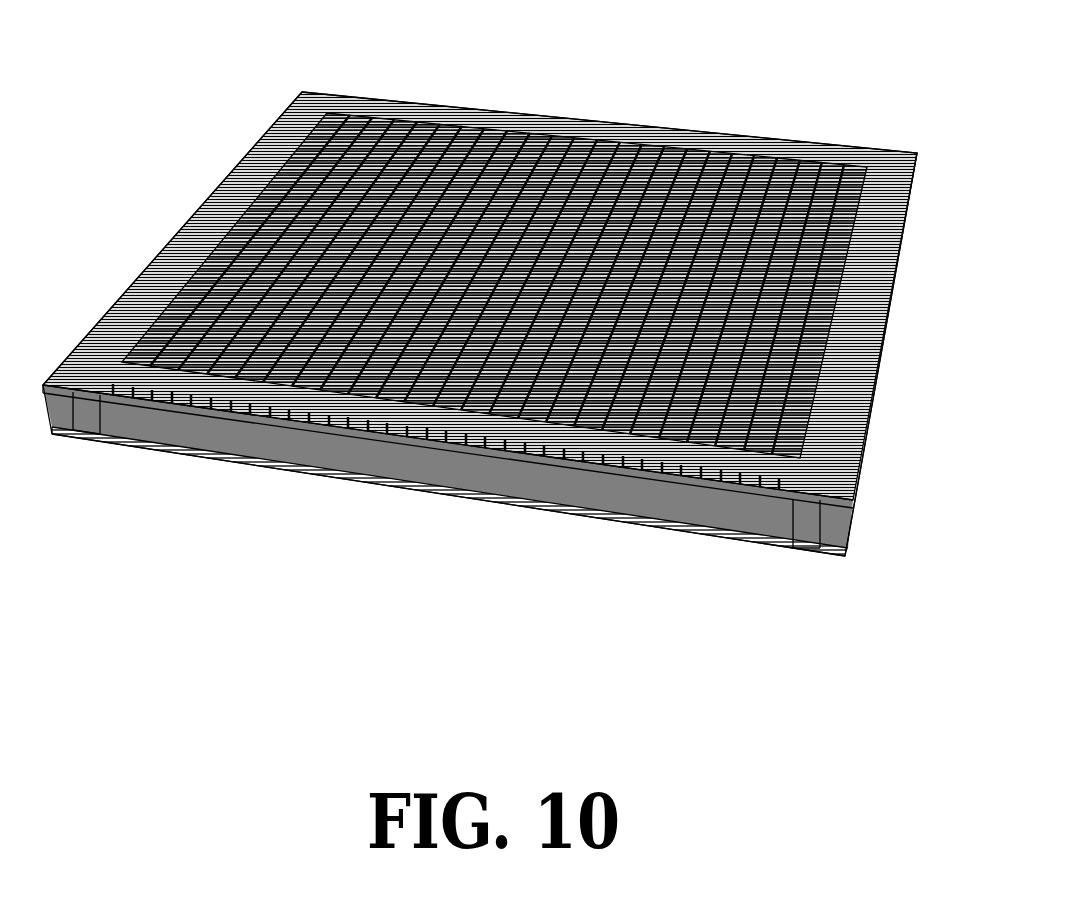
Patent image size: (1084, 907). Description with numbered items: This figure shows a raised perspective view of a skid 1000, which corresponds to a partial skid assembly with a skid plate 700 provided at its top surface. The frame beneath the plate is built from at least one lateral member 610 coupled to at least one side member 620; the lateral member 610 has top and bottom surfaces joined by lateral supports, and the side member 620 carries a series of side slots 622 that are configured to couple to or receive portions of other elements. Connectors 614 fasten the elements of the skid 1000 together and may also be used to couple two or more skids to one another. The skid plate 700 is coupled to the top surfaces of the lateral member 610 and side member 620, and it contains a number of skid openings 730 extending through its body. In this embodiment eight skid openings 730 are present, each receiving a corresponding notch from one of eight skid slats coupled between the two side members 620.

The skid 1000 is at (163, 582).
The lateral member 610 is at (213, 186).
The connector 614 is at (102, 428).
The side member 620 is at (825, 145).
The side slot 622 is at (340, 419).
The skid plate 700 is at (340, 140).
The skid opening 730 is at (770, 283).